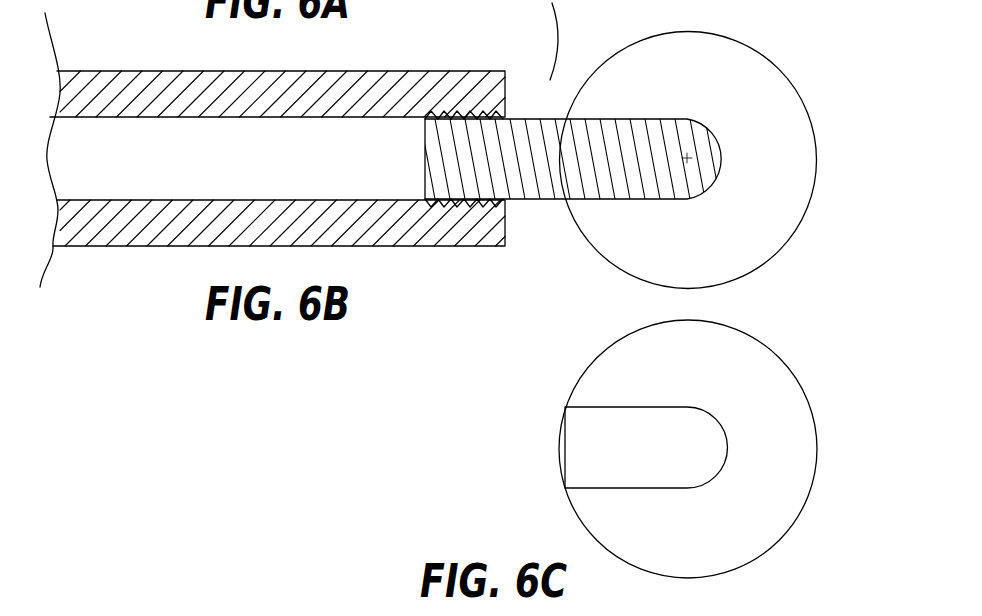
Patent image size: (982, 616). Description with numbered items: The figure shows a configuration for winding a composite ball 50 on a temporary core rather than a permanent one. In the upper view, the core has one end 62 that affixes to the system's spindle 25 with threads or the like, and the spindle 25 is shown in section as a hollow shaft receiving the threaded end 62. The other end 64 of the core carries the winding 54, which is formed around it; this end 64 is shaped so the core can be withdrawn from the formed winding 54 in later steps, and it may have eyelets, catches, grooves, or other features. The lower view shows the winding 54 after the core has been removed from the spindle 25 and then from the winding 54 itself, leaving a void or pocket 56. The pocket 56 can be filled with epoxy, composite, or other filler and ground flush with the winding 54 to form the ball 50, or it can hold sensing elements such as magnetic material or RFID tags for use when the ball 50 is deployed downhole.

In FIG. 6B, the spindle 25 is at (252, 71).
In FIG. 6B, the ball 50 is at (692, 32).
In FIG. 6C, the ball 50 is at (780, 363).
In FIG. 6B, the winding 54 is at (775, 100).
In FIG. 6C, the winding 54 is at (767, 525).
In FIG. 6C, the pocket 56 is at (598, 488).
In FIG. 6B, the end 62 is at (710, 186).
In FIG. 6B, the end 64 is at (468, 106).